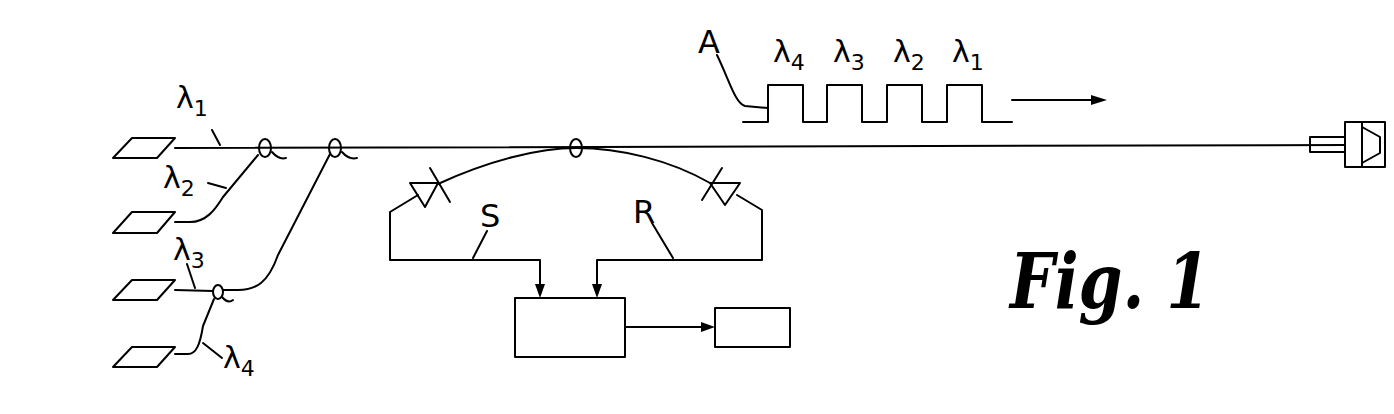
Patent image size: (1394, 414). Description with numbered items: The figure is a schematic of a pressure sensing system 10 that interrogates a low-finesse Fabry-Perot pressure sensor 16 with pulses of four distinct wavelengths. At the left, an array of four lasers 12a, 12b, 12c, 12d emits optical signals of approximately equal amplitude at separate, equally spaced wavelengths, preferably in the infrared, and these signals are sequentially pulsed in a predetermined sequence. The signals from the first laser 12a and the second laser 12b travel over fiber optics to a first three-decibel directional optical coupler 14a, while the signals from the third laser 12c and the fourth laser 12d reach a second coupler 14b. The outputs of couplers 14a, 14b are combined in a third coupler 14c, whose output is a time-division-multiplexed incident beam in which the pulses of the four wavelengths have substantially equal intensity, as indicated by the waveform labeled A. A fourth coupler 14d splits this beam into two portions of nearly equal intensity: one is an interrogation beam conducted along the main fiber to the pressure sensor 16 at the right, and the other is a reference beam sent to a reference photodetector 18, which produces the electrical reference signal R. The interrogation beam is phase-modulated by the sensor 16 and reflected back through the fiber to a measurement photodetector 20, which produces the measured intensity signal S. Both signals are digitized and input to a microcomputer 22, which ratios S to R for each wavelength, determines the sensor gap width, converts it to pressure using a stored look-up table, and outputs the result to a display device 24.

The pressure sensing system 10 is at (474, 74).
The first laser 12a is at (113, 153).
The second laser 12b is at (113, 228).
The third laser 12c is at (113, 295).
The fourth laser 12d is at (113, 363).
The first 3 dB directional optical coupler 14a is at (267, 139).
The second 3 dB directional optical coupler 14b is at (223, 303).
The third 3 dB directional optical coupler 14c is at (339, 141).
The fourth 3 dB directional optical coupler 14d is at (581, 141).
The low-finesse Fabry-Perot pressure sensor 16 is at (1358, 122).
The reference photodetector 18 is at (740, 183).
The measurement photodetector 20 is at (410, 183).
The microcomputer 22 is at (588, 340).
The display device 24 is at (773, 341).